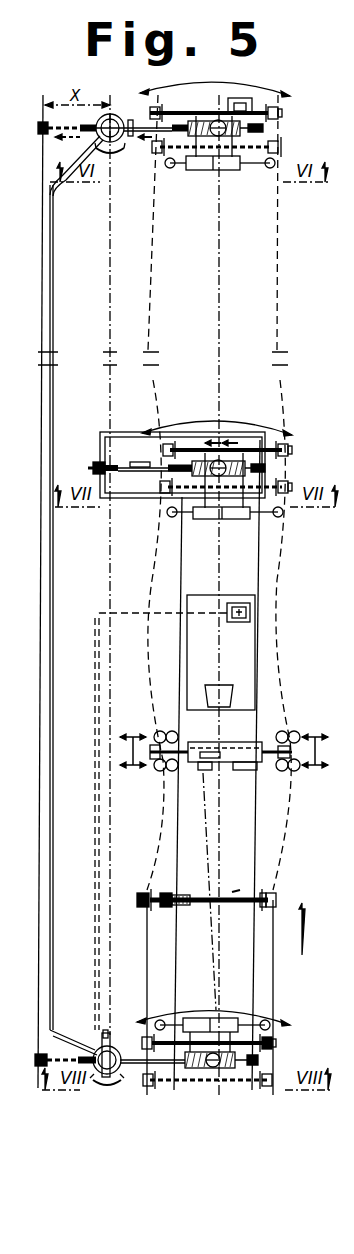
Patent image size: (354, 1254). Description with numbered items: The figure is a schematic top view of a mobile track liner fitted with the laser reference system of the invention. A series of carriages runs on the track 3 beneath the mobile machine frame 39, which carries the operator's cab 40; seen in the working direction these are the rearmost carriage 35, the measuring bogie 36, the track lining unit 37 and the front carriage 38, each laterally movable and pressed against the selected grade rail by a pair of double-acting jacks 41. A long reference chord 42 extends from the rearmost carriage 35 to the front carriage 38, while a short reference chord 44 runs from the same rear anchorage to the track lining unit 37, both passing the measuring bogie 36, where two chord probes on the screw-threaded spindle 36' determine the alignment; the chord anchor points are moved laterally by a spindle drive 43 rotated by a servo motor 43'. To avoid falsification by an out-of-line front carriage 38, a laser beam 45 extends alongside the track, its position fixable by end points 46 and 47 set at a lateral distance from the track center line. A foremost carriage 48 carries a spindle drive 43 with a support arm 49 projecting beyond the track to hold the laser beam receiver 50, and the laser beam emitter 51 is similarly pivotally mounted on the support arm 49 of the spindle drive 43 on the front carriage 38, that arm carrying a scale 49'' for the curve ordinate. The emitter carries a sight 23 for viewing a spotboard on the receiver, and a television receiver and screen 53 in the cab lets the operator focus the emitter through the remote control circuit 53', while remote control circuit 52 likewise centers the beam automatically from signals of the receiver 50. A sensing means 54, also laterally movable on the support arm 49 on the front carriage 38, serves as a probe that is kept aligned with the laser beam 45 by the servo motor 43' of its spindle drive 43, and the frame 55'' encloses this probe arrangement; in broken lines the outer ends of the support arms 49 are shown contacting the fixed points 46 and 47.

The track 3 is at (285, 262).
The sight 23 is at (112, 1078).
The rearmost carriage 35 is at (277, 1052).
The measuring bogie 36 is at (221, 984).
The screw-threaded spindle 36' is at (183, 886).
The track lining unit 37 is at (292, 740).
The front carriage 38 is at (286, 440).
The machine frame 39 is at (255, 646).
The operator's cab 40 is at (286, 690).
The double-acting jacks 41 is at (236, 172).
The long reference chord 42 is at (221, 585).
The spindle drive 43 is at (213, 584).
The servo motor 43' is at (277, 591).
The short reference chord 44 is at (205, 812).
The laser beam 45 is at (109, 250).
The end point 46 is at (48, 135).
The end point 47 is at (65, 1083).
The foremost carriage 48 is at (273, 88).
The support arm 49 is at (152, 591).
The scale 49'' is at (177, 418).
The laser beam receiver 50 is at (110, 110).
The laser beam emitter 51 is at (103, 1076).
The remote control circuit 52 is at (53, 545).
The television receiver and screen 53 is at (199, 610).
The remote control circuit 53' is at (83, 824).
The sensing means 54 is at (92, 462).
The frame 55'' is at (196, 449).